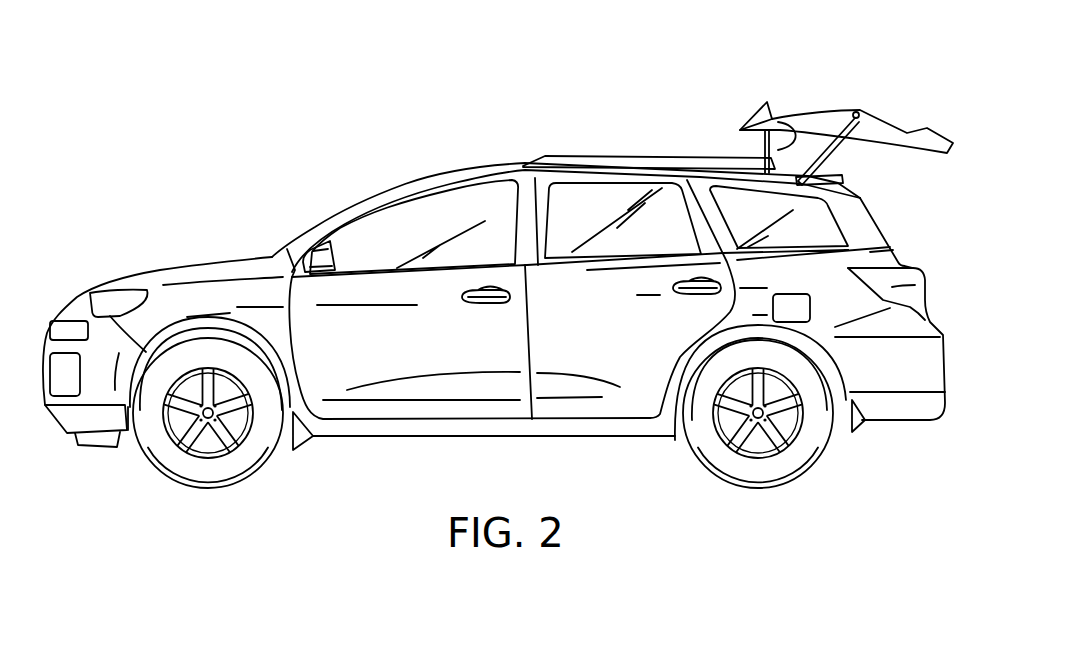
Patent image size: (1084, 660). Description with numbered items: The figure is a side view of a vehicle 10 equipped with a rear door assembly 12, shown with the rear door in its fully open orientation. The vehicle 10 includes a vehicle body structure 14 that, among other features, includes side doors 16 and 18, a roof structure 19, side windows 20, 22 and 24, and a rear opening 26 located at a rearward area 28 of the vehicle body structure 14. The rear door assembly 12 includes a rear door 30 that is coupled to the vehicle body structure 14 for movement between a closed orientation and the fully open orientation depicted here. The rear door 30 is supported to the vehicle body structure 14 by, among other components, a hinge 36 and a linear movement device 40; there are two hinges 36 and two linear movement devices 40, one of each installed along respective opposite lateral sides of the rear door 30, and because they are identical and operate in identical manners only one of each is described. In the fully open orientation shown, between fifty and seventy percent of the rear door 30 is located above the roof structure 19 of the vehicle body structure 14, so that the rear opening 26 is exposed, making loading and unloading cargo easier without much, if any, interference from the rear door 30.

The vehicle 10 is at (278, 146).
The rear door assembly 12 is at (822, 98).
The vehicle body structure 14 is at (455, 166).
The side door 16 is at (415, 353).
The side door 18 is at (612, 342).
The roof structure 19 is at (633, 177).
The side window 20 is at (390, 232).
The side window 22 is at (593, 207).
The side window 24 is at (737, 207).
The rear opening 26 is at (887, 238).
The rearward area 28 is at (858, 180).
The rear door 30 is at (885, 130).
The hinge 36 is at (777, 148).
The linear movement device 40 is at (828, 150).